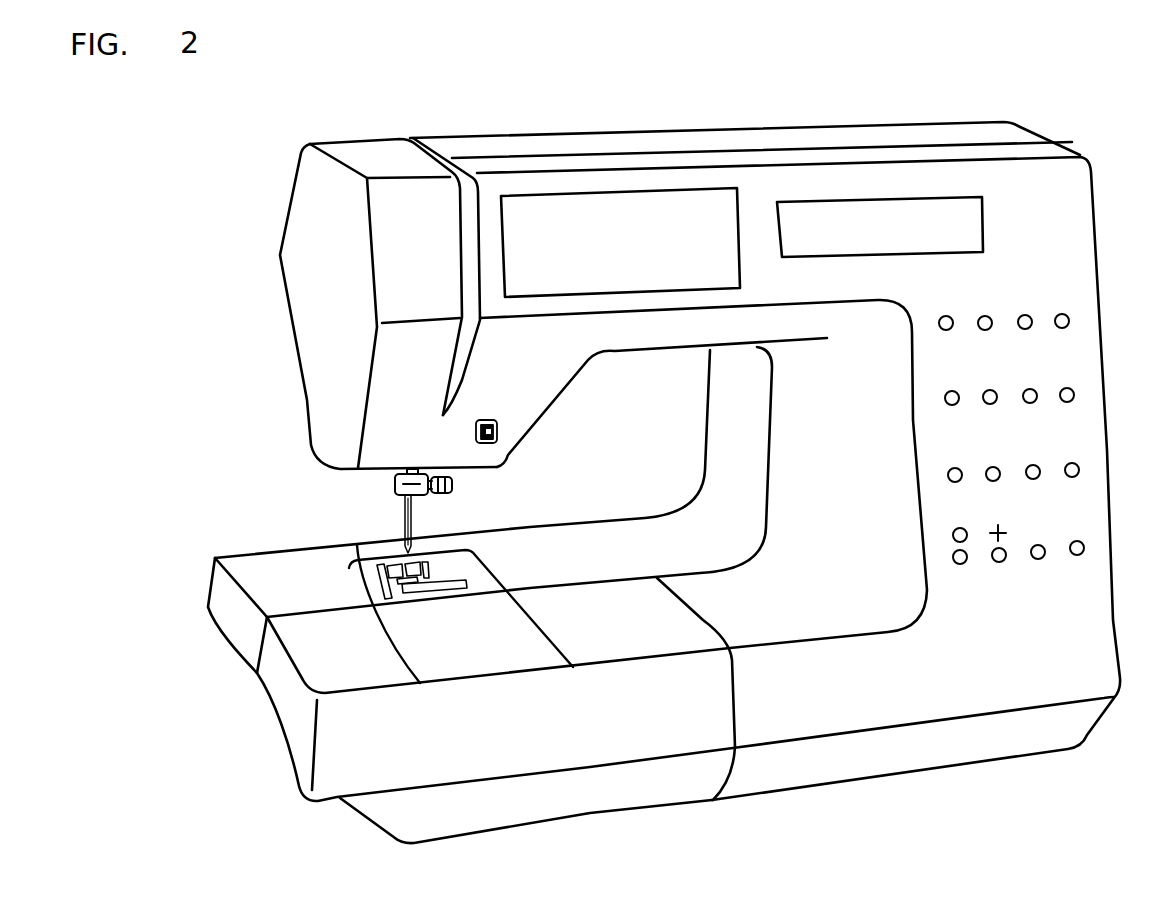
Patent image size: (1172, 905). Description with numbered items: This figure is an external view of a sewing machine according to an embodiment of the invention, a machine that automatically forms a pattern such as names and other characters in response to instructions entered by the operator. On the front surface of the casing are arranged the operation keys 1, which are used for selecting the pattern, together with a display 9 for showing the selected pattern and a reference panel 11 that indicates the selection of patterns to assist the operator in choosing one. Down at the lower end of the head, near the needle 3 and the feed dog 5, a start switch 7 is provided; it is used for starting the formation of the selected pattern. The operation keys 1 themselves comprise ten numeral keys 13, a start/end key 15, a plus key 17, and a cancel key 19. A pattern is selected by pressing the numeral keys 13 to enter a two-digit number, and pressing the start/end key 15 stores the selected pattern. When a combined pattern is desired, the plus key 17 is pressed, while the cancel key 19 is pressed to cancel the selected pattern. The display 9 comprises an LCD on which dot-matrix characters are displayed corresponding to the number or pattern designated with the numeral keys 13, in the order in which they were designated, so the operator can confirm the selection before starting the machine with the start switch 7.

The operation keys 1 is at (1055, 275).
The needle 3 is at (403, 522).
The feed dog 5 is at (357, 545).
The start switch 7 is at (493, 440).
The display 9 is at (853, 203).
The reference panel 11 is at (608, 193).
The numeral keys 13 is at (993, 318).
The start/end key 15 is at (1080, 470).
The plus key 17 is at (1001, 562).
The cancel key 19 is at (1047, 560).